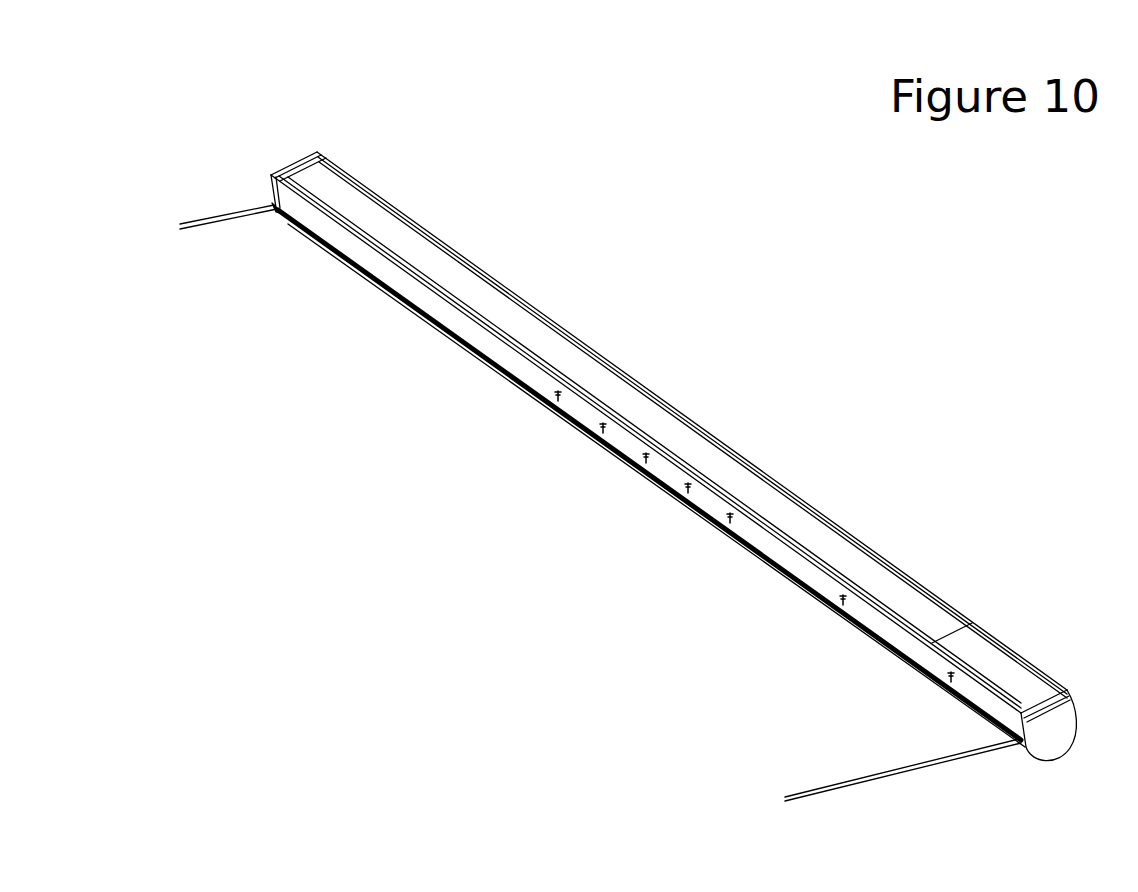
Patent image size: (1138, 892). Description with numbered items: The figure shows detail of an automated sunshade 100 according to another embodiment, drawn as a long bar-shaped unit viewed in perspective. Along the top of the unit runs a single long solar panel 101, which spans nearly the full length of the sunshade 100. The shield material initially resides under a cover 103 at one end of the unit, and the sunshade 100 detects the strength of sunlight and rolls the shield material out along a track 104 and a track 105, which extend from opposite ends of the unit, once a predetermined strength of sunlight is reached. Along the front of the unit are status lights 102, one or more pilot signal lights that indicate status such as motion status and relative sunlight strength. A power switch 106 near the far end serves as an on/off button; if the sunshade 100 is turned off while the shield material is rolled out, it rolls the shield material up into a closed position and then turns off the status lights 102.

The automated sunshade 100 is at (470, 352).
The solar panel 101 is at (513, 306).
The status lights 102 is at (730, 517).
The cover 103 is at (322, 157).
The track 104 is at (247, 213).
The track 105 is at (840, 784).
The power switch 106 is at (948, 677).